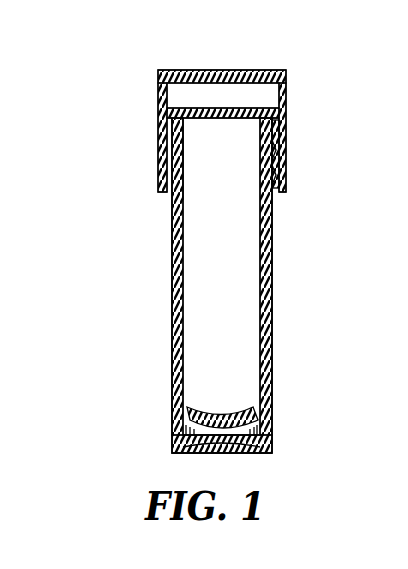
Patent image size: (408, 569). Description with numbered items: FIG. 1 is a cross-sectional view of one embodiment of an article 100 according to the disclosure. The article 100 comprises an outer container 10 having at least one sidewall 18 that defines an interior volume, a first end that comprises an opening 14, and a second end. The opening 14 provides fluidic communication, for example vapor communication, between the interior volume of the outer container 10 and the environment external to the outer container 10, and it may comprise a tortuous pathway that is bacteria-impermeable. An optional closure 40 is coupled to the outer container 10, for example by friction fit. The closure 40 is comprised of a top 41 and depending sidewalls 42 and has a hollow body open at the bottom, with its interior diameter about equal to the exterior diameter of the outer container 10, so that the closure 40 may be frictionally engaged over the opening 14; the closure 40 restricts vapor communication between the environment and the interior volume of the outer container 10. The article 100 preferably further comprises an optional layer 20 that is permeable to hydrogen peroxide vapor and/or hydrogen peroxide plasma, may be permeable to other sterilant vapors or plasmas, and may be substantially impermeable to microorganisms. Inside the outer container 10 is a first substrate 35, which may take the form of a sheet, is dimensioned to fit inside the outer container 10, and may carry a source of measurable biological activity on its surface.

The article 100 is at (122, 398).
The sidewall 18 is at (272, 290).
The opening 14 is at (207, 118).
The layer 20 is at (277, 110).
The top 41 is at (191, 70).
The closure 40 is at (160, 80).
The depending sidewalls 42 is at (285, 163).
The outer container 10 is at (262, 410).
The first substrate 35 is at (192, 431).